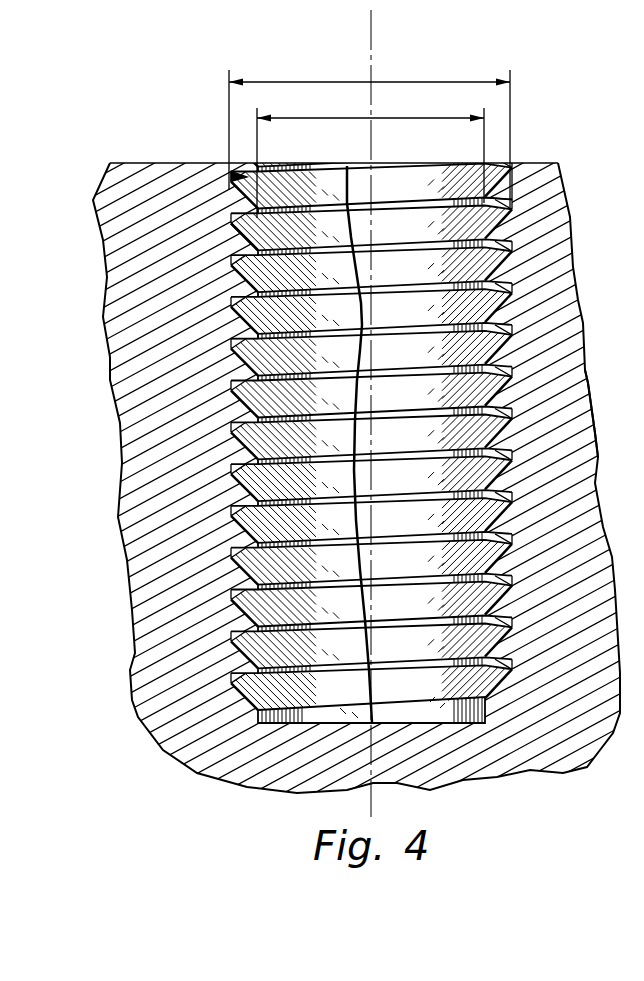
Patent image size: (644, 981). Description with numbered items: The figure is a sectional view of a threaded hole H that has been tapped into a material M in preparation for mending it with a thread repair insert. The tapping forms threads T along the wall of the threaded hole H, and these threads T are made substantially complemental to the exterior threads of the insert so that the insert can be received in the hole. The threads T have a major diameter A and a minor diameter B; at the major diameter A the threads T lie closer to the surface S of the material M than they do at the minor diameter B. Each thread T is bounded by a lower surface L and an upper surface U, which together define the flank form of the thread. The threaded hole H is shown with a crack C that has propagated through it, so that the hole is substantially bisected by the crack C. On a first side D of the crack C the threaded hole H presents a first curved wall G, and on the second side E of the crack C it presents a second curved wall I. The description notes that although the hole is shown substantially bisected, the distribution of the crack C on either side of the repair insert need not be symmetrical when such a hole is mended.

The threaded hole H is at (306, 62).
The major diameter A is at (382, 81).
The minor diameter B is at (395, 118).
The first curved wall G is at (286, 165).
The crack C is at (348, 190).
The second curved wall I is at (492, 167).
The surface S is at (543, 163).
The lower surface L is at (237, 212).
The upper surface U is at (231, 241).
The material M is at (143, 256).
The first side D is at (164, 353).
The threads T is at (238, 326).
The second side E is at (567, 431).